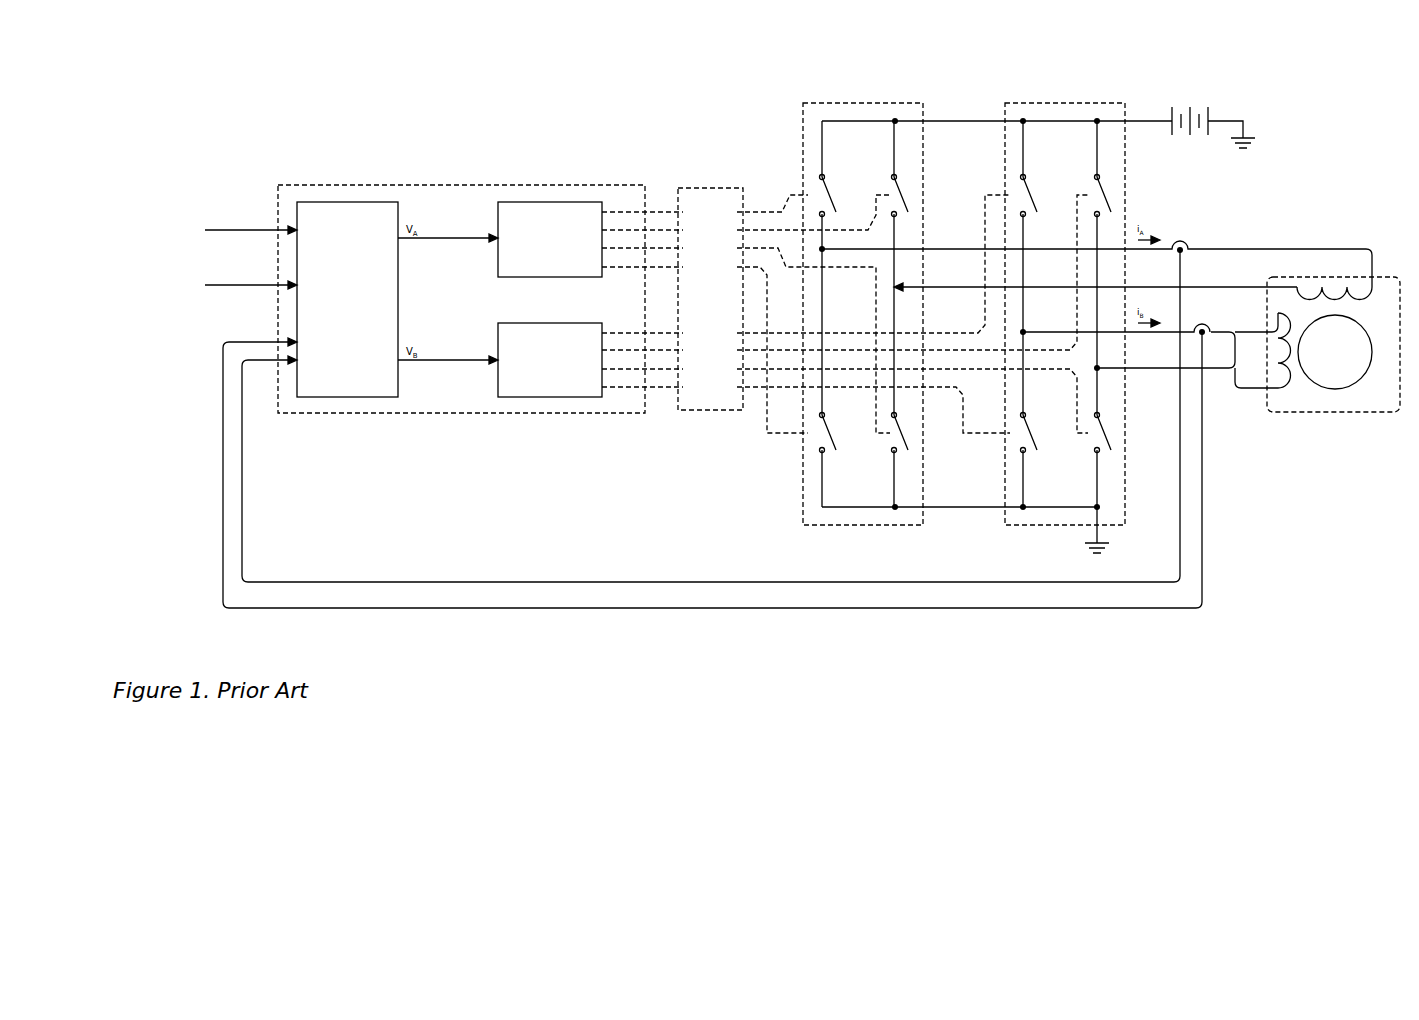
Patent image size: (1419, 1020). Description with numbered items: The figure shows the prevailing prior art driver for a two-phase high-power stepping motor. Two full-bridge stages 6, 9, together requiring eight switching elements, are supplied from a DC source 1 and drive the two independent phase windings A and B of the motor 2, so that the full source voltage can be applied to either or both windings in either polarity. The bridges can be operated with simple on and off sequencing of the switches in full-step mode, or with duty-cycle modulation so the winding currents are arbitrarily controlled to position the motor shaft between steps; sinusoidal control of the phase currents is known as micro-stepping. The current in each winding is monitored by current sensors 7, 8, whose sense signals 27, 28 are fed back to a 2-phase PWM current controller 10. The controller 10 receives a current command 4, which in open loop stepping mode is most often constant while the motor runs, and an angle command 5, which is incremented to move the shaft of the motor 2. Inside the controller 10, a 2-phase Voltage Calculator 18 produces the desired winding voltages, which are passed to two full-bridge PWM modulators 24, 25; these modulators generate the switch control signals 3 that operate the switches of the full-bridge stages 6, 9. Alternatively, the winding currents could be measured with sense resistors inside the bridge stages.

The DC source 1 is at (1175, 105).
The motor 2 is at (1335, 412).
The switch control signals 3 is at (710, 410).
The current command 4 is at (215, 229).
The angle command 5 is at (215, 285).
The full-bridge stage 6 is at (822, 103).
The current sensor 7 is at (1181, 243).
The current sensor 8 is at (1203, 326).
The full-bridge stage 9 is at (1040, 103).
The 2-phase PWM current controller 10 is at (435, 185).
The 2-phase Voltage Calculator 18 is at (352, 209).
The full-bridge PWM modulator 24 is at (548, 277).
The full-bridge PWM modulator 25 is at (540, 323).
The phase A current sense signal 27 is at (558, 582).
The phase B current sense signal 28 is at (558, 608).